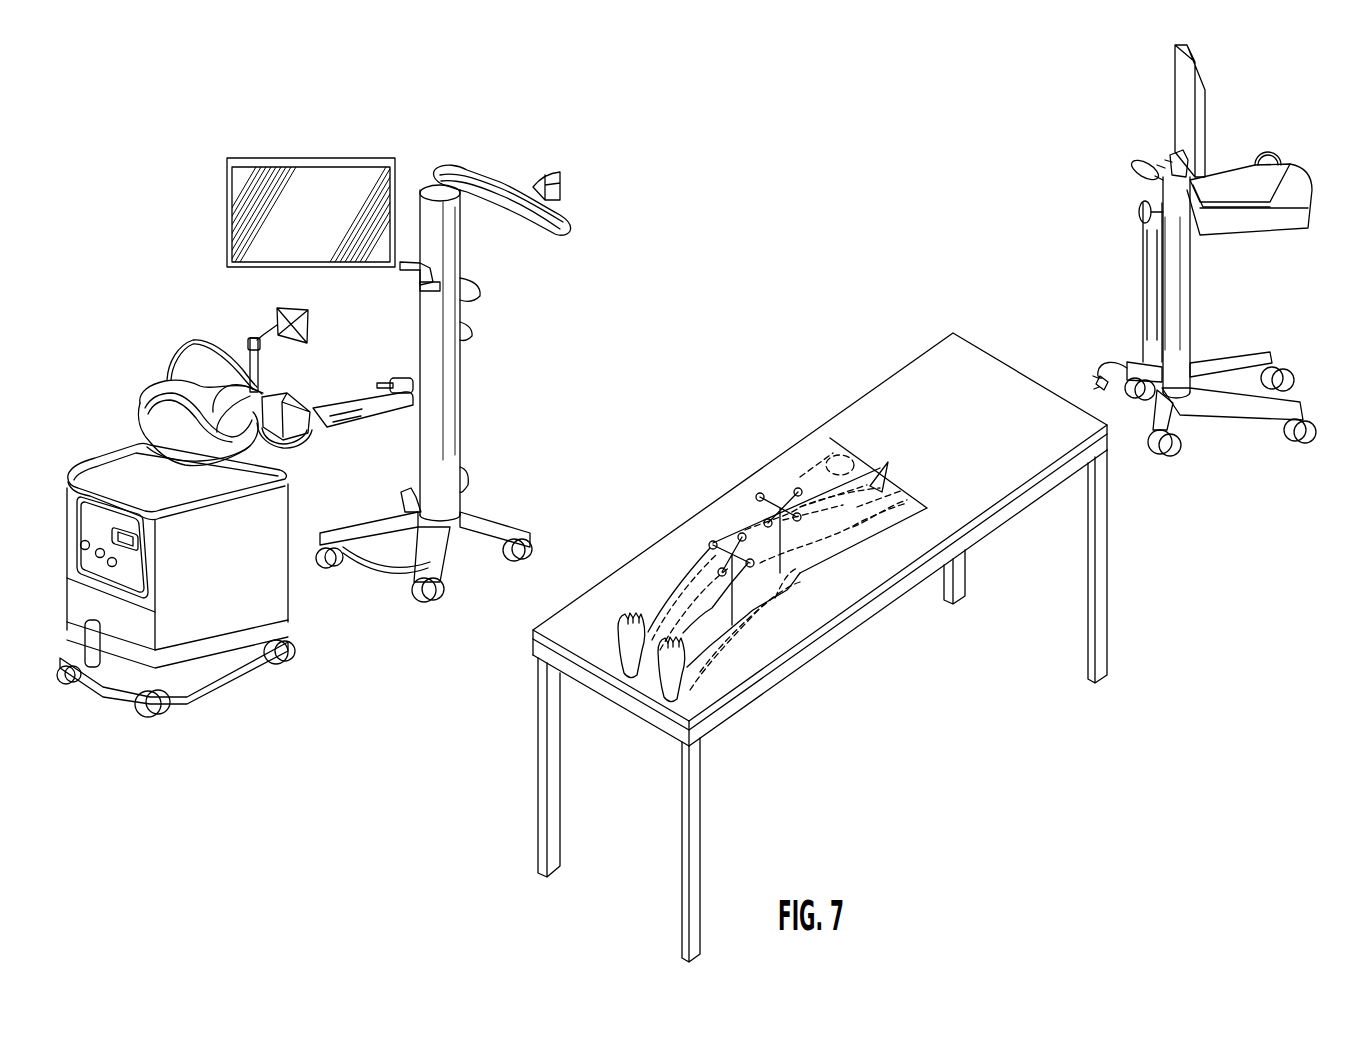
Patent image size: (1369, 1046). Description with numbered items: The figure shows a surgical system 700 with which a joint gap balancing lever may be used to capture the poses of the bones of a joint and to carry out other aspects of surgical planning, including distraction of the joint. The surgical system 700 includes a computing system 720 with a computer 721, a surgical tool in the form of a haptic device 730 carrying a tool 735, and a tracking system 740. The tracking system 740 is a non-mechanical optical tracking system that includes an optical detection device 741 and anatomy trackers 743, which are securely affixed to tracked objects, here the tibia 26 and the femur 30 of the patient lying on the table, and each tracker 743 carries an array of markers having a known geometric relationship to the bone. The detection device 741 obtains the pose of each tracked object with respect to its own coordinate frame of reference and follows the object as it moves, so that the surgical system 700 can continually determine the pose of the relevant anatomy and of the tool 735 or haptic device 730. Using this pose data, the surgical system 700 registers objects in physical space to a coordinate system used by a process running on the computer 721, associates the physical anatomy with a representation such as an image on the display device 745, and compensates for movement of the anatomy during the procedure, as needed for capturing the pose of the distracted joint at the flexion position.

The surgical system 700 is at (166, 195).
The tibia 26 is at (708, 652).
The femur 30 is at (819, 570).
The anatomy trackers 743 is at (712, 541).
The haptic device 730 is at (121, 374).
The tool 735 is at (388, 378).
The tracking system 740 is at (478, 125).
The detection device 741 is at (505, 173).
The display device 745 is at (272, 158).
The computing system 720 is at (1303, 147).
The computer 721 is at (1222, 167).